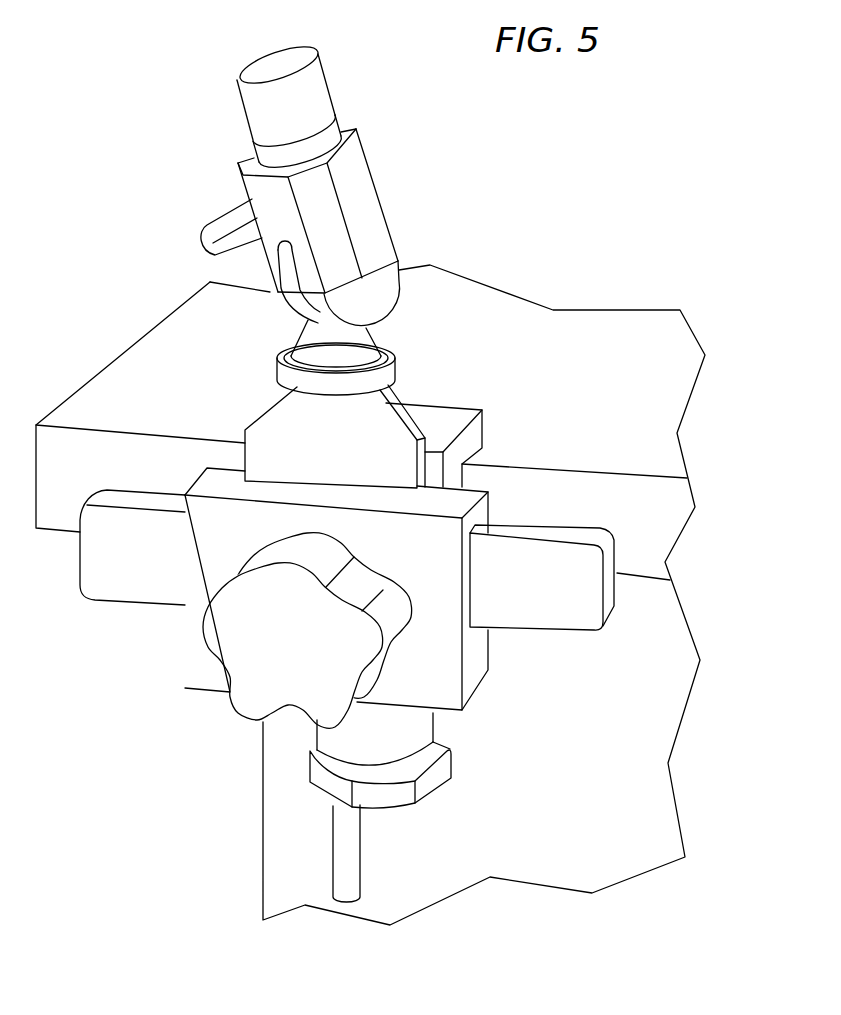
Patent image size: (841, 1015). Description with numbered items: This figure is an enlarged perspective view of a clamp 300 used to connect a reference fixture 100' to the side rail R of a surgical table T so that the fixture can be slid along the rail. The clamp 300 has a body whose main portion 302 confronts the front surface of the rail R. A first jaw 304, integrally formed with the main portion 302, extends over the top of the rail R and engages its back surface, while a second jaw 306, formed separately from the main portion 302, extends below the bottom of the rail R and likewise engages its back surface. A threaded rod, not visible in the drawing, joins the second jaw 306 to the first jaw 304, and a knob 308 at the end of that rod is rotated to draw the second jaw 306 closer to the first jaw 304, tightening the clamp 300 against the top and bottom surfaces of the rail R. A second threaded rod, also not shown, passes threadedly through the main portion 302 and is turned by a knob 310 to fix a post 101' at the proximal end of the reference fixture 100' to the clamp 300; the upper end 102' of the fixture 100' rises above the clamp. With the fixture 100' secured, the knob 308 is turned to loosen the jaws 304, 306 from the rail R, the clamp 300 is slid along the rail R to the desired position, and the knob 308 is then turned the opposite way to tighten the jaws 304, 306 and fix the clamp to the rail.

The reference fixture 100' is at (256, 197).
The cap / handle end 102' is at (260, 103).
The post 101' is at (314, 853).
The clamp 300 is at (348, 602).
The main portion 302 is at (446, 687).
The first jaw 304 is at (480, 515).
The second jaw 306 is at (488, 670).
The knob 308 is at (396, 806).
The knob 310 is at (253, 693).
The side rail R is at (578, 627).
The table T is at (672, 694).